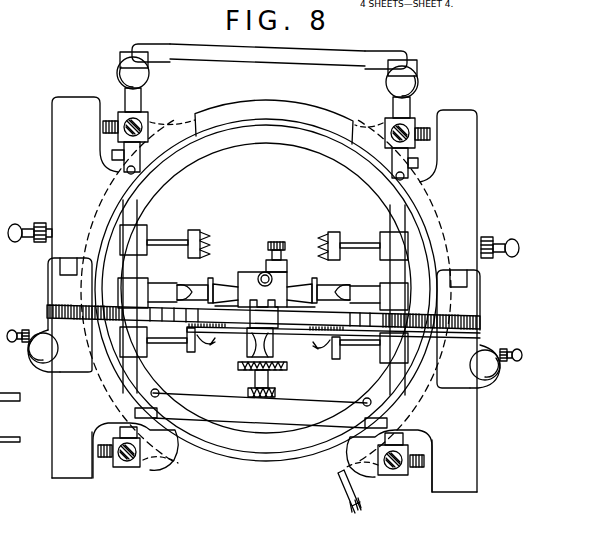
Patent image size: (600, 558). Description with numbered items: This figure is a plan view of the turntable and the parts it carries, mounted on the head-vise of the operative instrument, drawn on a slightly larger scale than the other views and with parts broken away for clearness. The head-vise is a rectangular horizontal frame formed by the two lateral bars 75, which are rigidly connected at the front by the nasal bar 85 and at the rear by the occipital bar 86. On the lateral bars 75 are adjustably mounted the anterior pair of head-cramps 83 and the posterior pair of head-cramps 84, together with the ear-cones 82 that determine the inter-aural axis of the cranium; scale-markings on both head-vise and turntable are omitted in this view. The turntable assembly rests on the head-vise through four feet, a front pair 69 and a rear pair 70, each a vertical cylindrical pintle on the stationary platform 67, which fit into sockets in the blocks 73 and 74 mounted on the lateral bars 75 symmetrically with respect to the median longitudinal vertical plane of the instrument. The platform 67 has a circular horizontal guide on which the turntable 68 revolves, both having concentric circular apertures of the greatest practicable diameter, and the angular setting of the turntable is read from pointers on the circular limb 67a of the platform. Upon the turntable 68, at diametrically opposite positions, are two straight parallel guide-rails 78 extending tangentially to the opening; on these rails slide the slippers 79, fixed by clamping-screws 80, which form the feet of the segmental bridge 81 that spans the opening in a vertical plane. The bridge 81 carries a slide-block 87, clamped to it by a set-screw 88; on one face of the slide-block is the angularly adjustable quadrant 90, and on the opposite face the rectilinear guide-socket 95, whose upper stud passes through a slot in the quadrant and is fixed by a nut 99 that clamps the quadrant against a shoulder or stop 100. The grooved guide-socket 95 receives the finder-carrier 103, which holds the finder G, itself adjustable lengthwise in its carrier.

The stationary platform 67 is at (57, 158).
The circular limb 67a is at (247, 140).
The turntable 68 is at (218, 108).
The front pair of feet 69 is at (124, 465).
The rear pair of feet 70 is at (146, 130).
The front blocks 73 is at (155, 468).
The rear blocks 74 is at (150, 120).
The lateral bars 75 is at (118, 92).
The guide-rails 78 is at (478, 160).
The slippers 79 is at (75, 372).
The clamping-screws 80 is at (36, 358).
The bridge 81 is at (165, 300).
The ear-cones 82 is at (219, 285).
The anterior head-cramps 83 is at (198, 232).
The posterior head-cramps 84 is at (193, 352).
The nasal bar 85 is at (292, 58).
The occipital bar 86 is at (255, 412).
The slide-block 87 is at (290, 330).
The set-screw 88 is at (248, 393).
The quadrant 90 is at (230, 336).
The guide-socket 95 is at (247, 274).
The nut 99 is at (280, 372).
The shoulder or stop 100 is at (265, 317).
The finder-carrier 103 is at (288, 272).
The finder G is at (262, 272).